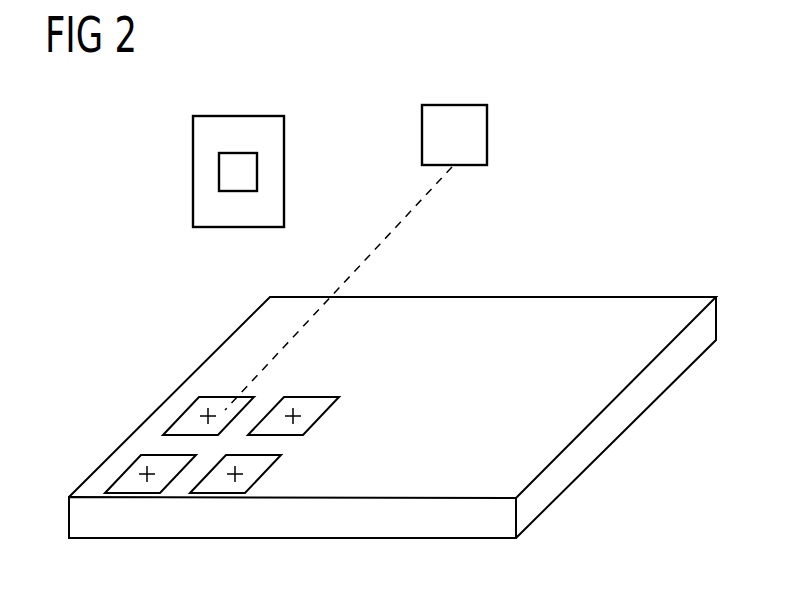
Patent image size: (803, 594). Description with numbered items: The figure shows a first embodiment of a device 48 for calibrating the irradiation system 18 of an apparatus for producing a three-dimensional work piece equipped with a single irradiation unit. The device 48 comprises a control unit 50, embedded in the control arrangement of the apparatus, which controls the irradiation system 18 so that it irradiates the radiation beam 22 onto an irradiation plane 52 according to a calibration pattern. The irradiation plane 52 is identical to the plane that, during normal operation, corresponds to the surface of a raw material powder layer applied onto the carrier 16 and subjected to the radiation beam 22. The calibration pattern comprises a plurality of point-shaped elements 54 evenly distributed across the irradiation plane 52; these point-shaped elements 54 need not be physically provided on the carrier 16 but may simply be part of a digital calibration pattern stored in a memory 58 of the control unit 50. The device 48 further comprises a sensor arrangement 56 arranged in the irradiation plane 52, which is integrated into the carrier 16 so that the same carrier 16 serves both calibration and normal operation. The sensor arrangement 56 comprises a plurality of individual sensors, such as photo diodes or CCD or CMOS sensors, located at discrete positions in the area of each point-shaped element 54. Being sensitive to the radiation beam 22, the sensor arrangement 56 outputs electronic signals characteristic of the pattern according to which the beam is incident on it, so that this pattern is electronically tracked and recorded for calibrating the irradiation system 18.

The carrier 16 is at (607, 433).
The irradiation system 18 is at (512, 116).
The radiation beam 22 is at (402, 220).
The device for calibrating the irradiation system 48 is at (684, 158).
The control unit 50 is at (270, 143).
The irradiation plane 52 is at (673, 298).
The point-shaped elements 54 is at (210, 412).
The sensor arrangement 56 is at (193, 402).
The memory 58 is at (232, 173).